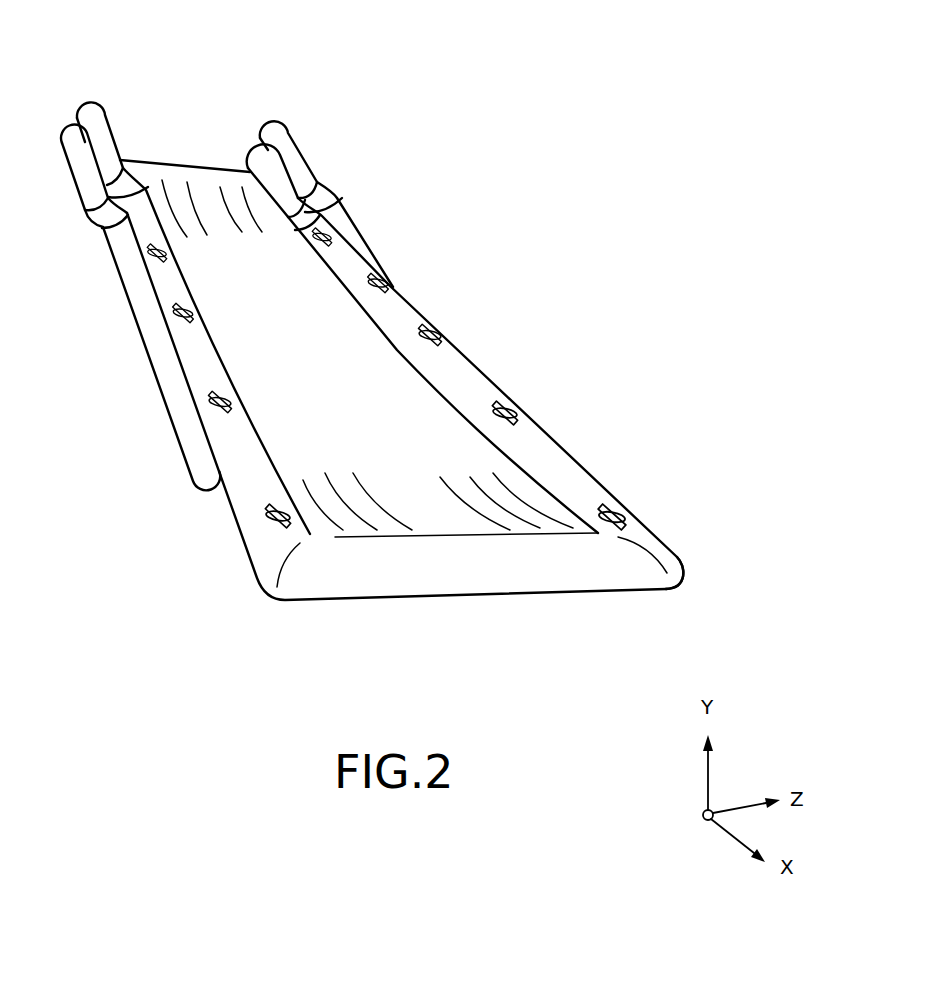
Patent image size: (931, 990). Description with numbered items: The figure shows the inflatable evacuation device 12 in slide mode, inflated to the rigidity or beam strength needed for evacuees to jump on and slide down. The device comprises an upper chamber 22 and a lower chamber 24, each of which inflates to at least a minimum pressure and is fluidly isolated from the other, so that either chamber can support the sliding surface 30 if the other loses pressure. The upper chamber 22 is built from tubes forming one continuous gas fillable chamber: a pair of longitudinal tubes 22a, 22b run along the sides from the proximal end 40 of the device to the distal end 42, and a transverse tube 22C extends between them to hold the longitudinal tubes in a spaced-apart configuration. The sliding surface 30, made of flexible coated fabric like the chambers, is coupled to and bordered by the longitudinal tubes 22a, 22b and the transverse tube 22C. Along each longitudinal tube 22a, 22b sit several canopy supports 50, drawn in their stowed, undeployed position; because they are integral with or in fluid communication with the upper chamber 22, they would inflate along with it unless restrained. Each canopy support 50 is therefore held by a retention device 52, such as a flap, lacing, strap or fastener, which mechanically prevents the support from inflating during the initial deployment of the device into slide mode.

The inflatable evacuation device 12 is at (546, 176).
The upper chamber 22 is at (553, 450).
The longitudinal tube 22a is at (190, 357).
The longitudinal tube 22b is at (357, 264).
The transverse tube 22C is at (584, 578).
The lower chamber 24 is at (135, 313).
The sliding surface 30 is at (393, 408).
The proximal end 40 is at (295, 118).
The distal end 42 is at (706, 565).
The canopy support 50 is at (437, 328).
The retention device 52 is at (525, 410).